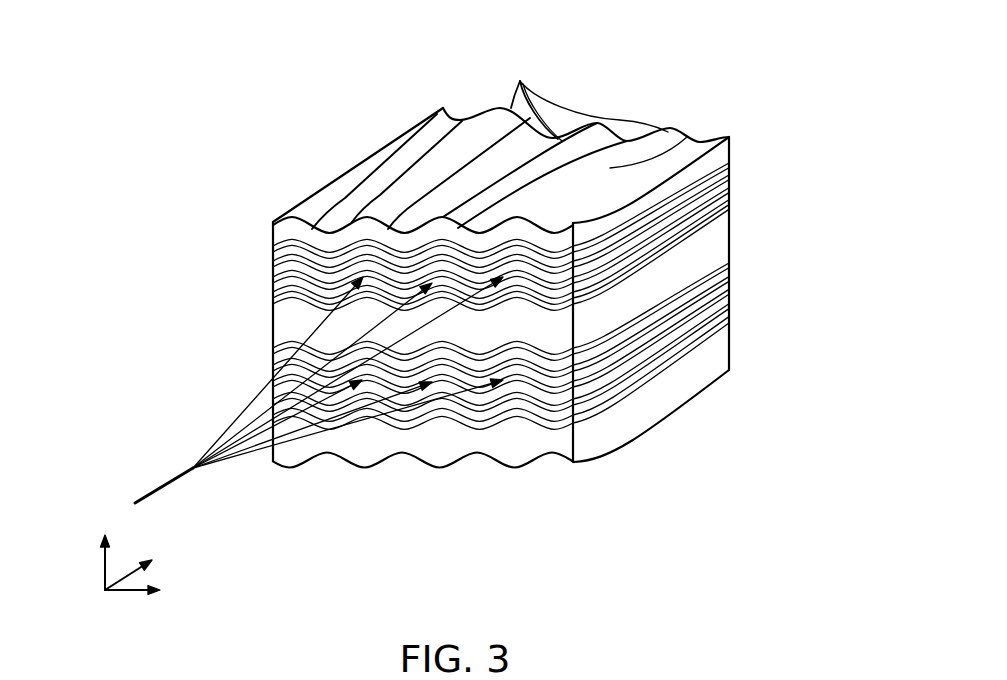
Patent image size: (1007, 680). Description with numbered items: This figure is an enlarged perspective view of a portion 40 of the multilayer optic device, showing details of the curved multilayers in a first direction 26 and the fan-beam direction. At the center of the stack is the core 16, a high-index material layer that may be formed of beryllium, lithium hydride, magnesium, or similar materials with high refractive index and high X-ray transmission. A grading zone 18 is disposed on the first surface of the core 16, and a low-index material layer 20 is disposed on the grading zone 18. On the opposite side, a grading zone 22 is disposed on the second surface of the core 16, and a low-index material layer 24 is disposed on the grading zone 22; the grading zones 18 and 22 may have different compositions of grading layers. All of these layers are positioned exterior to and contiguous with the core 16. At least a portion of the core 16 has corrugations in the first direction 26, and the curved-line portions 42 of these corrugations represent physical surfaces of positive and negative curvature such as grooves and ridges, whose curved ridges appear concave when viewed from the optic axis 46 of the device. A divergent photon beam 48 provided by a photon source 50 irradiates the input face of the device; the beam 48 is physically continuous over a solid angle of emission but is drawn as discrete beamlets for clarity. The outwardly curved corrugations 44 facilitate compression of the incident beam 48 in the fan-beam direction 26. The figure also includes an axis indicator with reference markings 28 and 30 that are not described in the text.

The core 16 is at (504, 336).
The grading zone 18 is at (271, 248).
The low-index material layer 20 is at (271, 222).
The grading zone 22 is at (271, 345).
The low-index material layer 24 is at (505, 453).
The first direction 26 is at (127, 592).
The depth axis direction 28 is at (128, 563).
The coordinate system 30 is at (103, 560).
The portion 40 is at (247, 68).
The curved-line portions 42 is at (533, 142).
The outwardly curved corrugations 44 is at (413, 162).
The optic axis 46 is at (448, 322).
The photon beam 48 is at (250, 458).
The photon source 50 is at (190, 466).